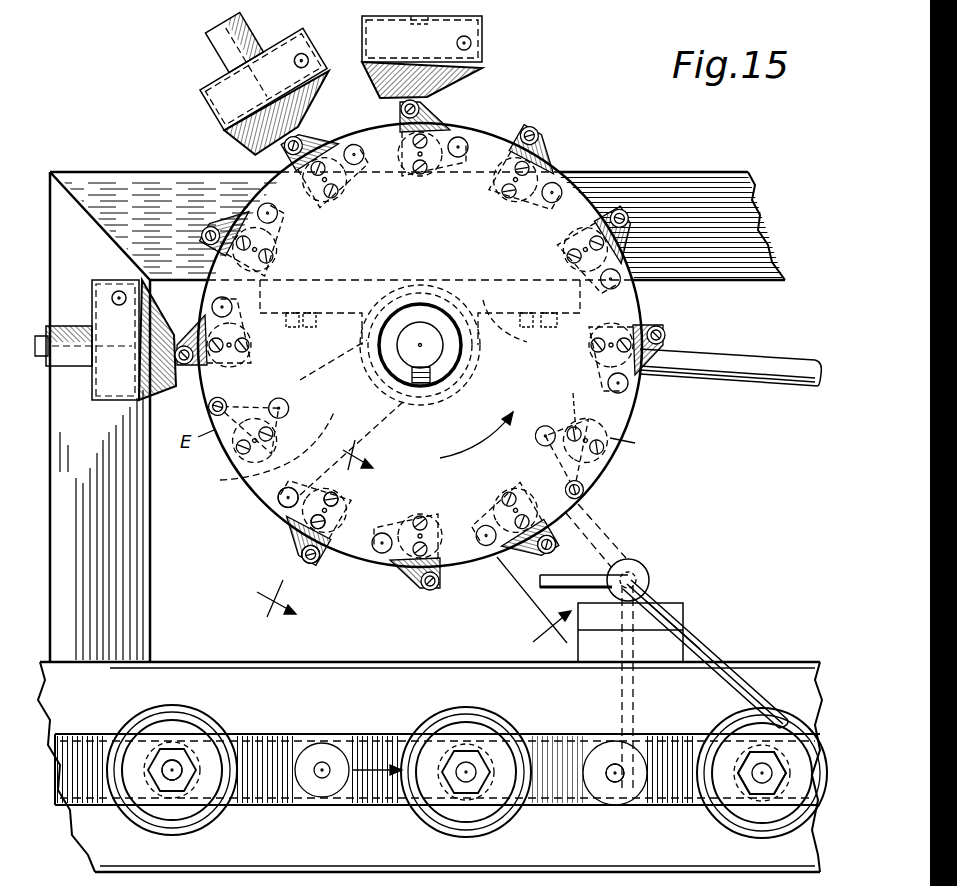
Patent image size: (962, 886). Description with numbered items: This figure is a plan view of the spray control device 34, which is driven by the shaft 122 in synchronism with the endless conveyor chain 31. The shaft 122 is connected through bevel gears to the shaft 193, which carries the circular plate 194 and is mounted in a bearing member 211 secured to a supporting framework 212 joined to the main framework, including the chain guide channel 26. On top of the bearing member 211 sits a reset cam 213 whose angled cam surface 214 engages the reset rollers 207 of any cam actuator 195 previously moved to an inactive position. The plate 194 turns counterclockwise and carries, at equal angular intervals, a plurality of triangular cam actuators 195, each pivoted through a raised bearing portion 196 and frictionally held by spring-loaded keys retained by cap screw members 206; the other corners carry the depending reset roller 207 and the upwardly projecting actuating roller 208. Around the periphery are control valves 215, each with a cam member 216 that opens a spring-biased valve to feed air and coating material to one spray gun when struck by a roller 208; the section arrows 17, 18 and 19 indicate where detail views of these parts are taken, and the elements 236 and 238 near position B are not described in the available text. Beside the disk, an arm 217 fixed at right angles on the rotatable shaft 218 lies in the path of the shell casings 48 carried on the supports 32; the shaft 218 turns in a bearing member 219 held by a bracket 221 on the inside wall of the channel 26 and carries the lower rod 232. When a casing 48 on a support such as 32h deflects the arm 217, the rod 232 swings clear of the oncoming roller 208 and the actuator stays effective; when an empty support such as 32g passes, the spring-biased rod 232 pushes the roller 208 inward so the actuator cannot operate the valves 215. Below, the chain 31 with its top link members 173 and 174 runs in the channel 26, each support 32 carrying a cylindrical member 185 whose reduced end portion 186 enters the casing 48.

The section line 17 is at (299, 534).
The section line 18 is at (338, 346).
The section line 19 is at (147, 32).
The chain guide channel 26 is at (177, 673).
The endless conveyor chain 31 is at (78, 758).
The article supports 32 is at (351, 745).
The spray control device 34 is at (235, 505).
The shell casing 48 is at (205, 718).
The shaft 122 is at (735, 368).
The top link member 173 is at (378, 792).
The top link member 174 is at (270, 793).
The cylindrical member 185 is at (587, 747).
The reduced end portion 186 is at (183, 770).
The shaft 193 is at (455, 362).
The circular plate 194 is at (380, 580).
The cam actuator 195 is at (298, 538).
The bearing portion 196 is at (350, 510).
The cap screw members 206 is at (584, 435).
The roller 207 is at (276, 522).
The roller 208 is at (300, 562).
The bearing member 211 is at (420, 319).
The supporting framework 212 is at (742, 275).
The reset cam 213 is at (329, 417).
The cam surface 214 is at (257, 447).
The control valves 215 is at (487, 32).
The cam member 216 is at (477, 80).
The arm 217 is at (693, 642).
The rotatable shaft 218 is at (644, 574).
The bearing member 219 is at (685, 603).
The bracket 221 is at (600, 646).
The rod 232 is at (543, 590).
The clamp block 236 is at (226, 108).
The clamp B 238 is at (308, 128).
The support 32g is at (597, 802).
The support 32h is at (740, 797).